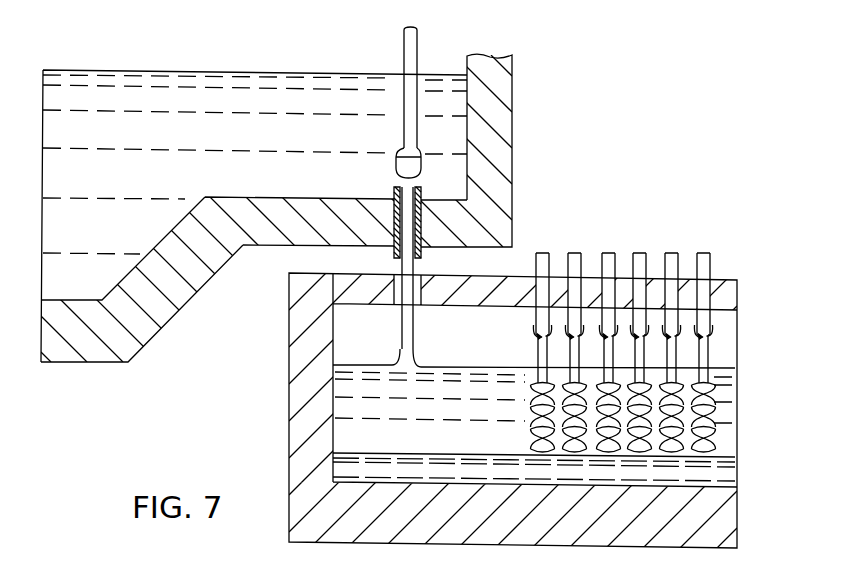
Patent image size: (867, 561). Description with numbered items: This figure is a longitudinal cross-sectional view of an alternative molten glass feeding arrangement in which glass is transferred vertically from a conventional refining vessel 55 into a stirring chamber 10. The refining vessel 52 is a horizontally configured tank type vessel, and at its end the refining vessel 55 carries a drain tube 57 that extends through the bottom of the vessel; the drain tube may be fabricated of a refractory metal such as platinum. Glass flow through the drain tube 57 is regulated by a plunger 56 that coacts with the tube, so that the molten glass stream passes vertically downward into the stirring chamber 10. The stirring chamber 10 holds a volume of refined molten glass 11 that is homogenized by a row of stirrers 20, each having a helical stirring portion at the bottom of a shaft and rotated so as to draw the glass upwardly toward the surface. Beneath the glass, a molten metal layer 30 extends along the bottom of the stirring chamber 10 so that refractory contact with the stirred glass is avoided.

The stirring chamber 10 is at (288, 305).
The refined molten glass 11 is at (722, 370).
The stirrers 20 is at (668, 253).
The molten metal layer 30 is at (722, 458).
The refining vessel 52 is at (158, 328).
The refining vessel 55 is at (512, 86).
The plunger 56 is at (404, 48).
The drain tube 57 is at (395, 252).